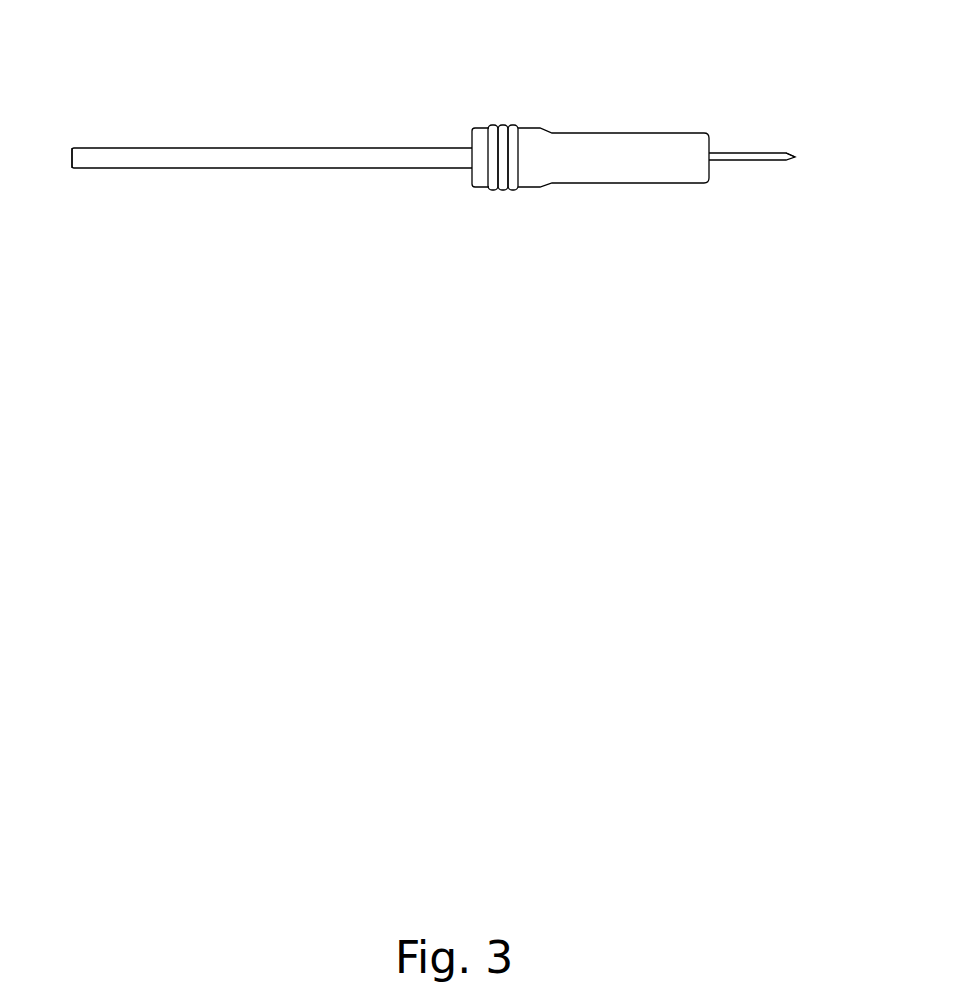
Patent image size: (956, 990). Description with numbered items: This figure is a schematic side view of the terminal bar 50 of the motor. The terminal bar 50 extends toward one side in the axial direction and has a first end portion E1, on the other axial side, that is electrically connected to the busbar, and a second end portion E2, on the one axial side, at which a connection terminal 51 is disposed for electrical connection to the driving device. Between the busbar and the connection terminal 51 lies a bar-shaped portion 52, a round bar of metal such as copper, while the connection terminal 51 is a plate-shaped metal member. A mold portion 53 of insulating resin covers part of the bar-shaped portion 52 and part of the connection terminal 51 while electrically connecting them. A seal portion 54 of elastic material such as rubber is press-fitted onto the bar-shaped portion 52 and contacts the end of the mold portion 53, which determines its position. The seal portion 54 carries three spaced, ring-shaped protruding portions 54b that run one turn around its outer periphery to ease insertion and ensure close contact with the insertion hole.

The terminal bar 50 is at (589, 81).
The connection terminal 51 is at (737, 153).
The bar-shaped portion 52 is at (246, 157).
The mold portion 53 is at (625, 140).
The seal portion 54 is at (472, 182).
The protruding portion 54b is at (492, 125).
The first end portion E1 is at (73, 169).
The second end portion E2 is at (782, 165).